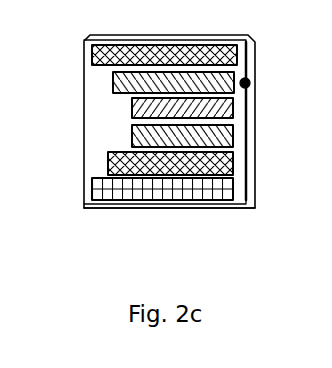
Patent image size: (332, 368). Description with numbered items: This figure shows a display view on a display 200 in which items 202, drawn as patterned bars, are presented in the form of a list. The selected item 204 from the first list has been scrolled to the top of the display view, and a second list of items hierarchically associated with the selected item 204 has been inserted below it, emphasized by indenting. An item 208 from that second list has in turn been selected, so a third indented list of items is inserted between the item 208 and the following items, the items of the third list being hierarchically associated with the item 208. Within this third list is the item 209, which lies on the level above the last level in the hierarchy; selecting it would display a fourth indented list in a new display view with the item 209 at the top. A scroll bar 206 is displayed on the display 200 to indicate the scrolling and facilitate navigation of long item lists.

The display 200 is at (200, 40).
The items 202 is at (171, 221).
The selected item 204 is at (92, 58).
The scroll bar 206 is at (250, 103).
The item from the second list 208 is at (113, 82).
The item from the third list 209 is at (131, 110).